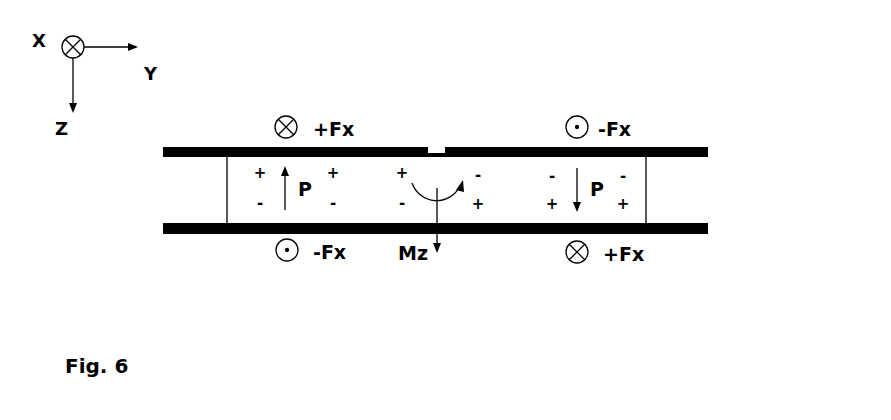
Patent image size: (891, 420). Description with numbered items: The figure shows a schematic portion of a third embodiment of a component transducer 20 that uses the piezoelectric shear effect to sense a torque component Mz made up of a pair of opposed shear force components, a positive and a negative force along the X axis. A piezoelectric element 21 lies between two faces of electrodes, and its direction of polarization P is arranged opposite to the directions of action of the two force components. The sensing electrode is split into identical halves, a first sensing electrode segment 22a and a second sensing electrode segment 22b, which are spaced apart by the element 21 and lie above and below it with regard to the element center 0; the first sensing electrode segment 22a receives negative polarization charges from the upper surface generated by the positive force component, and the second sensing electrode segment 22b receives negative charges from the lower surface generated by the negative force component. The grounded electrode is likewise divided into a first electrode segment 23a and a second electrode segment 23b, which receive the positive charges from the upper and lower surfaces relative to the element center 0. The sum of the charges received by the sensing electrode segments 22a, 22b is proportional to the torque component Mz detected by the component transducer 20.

The component transducer 20 is at (735, 189).
The element 21 is at (377, 163).
The first sensing electrode segment 22a is at (667, 147).
The second sensing electrode segment 22b is at (193, 235).
The first electrode segment 23a is at (242, 147).
The second electrode segment 23b is at (668, 236).
The element center 0 is at (452, 236).